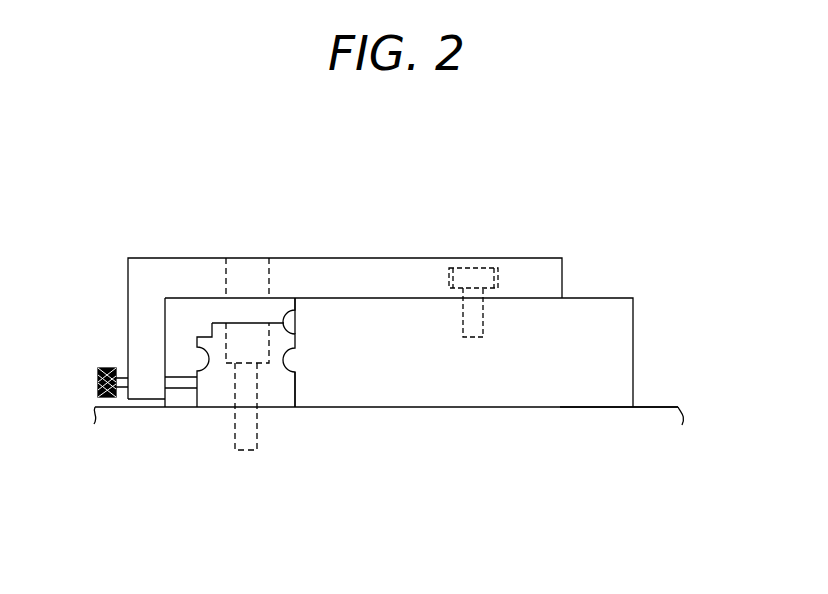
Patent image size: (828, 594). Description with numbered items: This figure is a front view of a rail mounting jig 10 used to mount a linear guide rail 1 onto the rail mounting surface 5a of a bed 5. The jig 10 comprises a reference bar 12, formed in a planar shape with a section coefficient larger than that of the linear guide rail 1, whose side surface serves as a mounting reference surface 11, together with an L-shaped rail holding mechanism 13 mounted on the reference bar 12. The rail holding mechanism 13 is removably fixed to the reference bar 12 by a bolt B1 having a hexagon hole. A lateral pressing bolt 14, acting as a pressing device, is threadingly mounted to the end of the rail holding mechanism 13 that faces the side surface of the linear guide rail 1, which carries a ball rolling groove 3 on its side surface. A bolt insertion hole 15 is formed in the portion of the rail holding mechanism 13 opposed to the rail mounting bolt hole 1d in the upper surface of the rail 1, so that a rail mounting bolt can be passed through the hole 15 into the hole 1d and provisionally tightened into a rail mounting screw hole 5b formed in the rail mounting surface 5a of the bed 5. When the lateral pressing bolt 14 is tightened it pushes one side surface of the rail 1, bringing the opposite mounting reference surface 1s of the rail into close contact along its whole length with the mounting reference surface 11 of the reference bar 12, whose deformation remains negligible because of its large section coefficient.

The linear guide rail 1 is at (280, 392).
The mounting reference surface 1s is at (297, 392).
The rail mounting bolt hole 1d is at (225, 340).
The ball rolling groove 3 is at (200, 365).
The bed 5 is at (603, 415).
The rail mounting surface 5a is at (658, 404).
The rail mounting screw hole 5b is at (245, 452).
The rail mounting jig 10 is at (633, 226).
The mounting reference surface 11 is at (303, 300).
The reference bar 12 is at (633, 317).
The rail holding mechanism 13 is at (532, 263).
The lateral pressing bolt 14 is at (177, 388).
The bolt insertion hole 15 is at (248, 277).
The bolt B1 is at (458, 272).